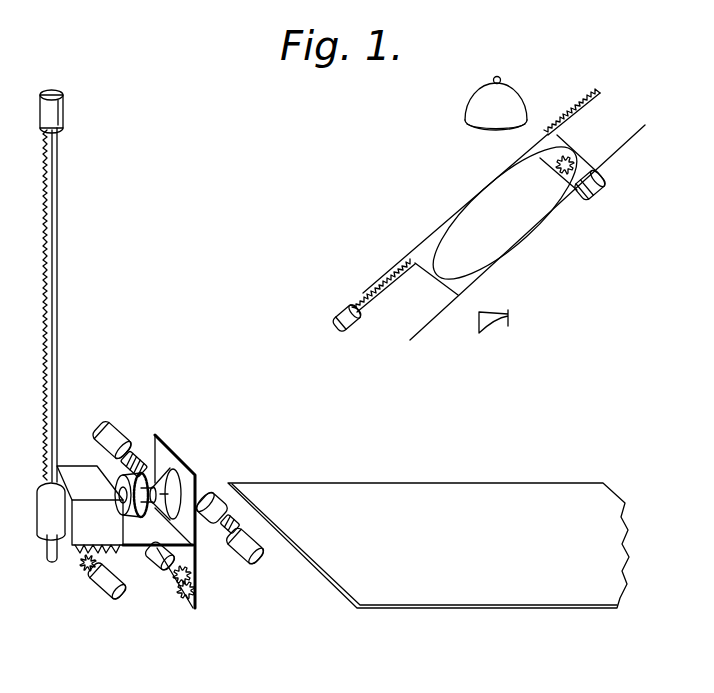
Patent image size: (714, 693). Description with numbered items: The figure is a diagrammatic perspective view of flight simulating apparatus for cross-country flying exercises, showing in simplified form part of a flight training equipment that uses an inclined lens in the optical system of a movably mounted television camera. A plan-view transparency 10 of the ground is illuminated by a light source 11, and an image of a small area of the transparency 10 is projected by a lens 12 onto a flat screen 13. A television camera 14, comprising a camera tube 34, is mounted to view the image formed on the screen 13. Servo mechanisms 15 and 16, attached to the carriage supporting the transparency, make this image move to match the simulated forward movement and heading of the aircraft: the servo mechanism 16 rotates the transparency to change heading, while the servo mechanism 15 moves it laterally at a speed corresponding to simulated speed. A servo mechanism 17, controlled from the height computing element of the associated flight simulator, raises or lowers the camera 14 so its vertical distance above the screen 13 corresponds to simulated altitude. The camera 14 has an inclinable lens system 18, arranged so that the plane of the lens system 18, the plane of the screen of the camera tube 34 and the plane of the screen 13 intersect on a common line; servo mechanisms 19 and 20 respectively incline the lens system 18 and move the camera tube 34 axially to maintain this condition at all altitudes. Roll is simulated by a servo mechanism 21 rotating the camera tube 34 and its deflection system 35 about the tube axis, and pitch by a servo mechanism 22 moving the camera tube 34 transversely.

The plan-view transparency 10 is at (484, 200).
The light source 11 is at (478, 106).
The lens 12 is at (500, 326).
The flat screen 13 is at (495, 610).
The television camera 14 is at (190, 428).
The servo mechanism 15 is at (335, 323).
The servo mechanism 16 is at (602, 178).
The servo mechanism 17 is at (63, 112).
The lens system 18 is at (213, 492).
The servo mechanism 19 is at (257, 556).
The servo mechanism 20 is at (100, 587).
The servo mechanism 21 is at (112, 425).
The servo mechanism 22 is at (152, 565).
The camera tube 34 is at (172, 482).
The deflection system 35 is at (116, 477).